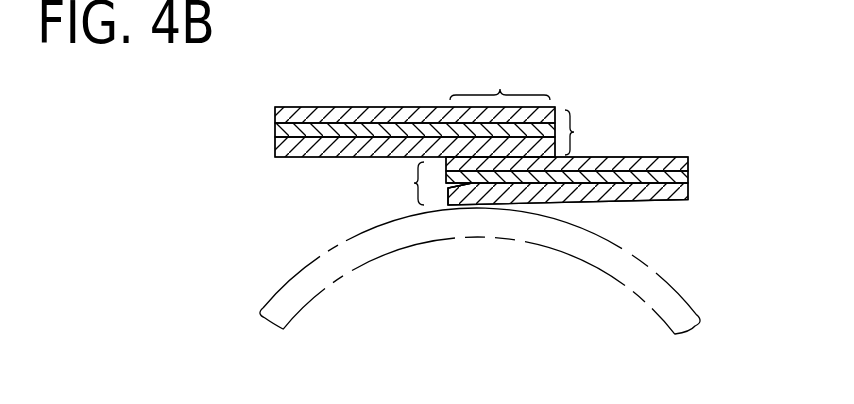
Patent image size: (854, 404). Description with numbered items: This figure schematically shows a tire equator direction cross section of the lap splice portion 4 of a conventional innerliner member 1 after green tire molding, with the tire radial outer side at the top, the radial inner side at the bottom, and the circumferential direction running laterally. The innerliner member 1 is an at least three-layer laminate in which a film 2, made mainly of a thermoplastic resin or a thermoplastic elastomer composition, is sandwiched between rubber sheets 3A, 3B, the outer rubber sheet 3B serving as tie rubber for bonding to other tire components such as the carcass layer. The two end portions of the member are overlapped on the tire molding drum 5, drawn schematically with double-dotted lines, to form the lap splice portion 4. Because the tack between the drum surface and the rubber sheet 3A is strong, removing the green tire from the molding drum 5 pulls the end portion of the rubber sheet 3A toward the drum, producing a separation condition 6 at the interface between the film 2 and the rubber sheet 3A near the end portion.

The innerliner member 1 is at (575, 132).
The film 2 is at (277, 129).
The rubber sheet 3A is at (314, 158).
The rubber sheet 3B is at (320, 108).
The lap splice portion 4 is at (502, 88).
The tire molding drum 5 is at (565, 253).
The separation condition 6 is at (447, 188).